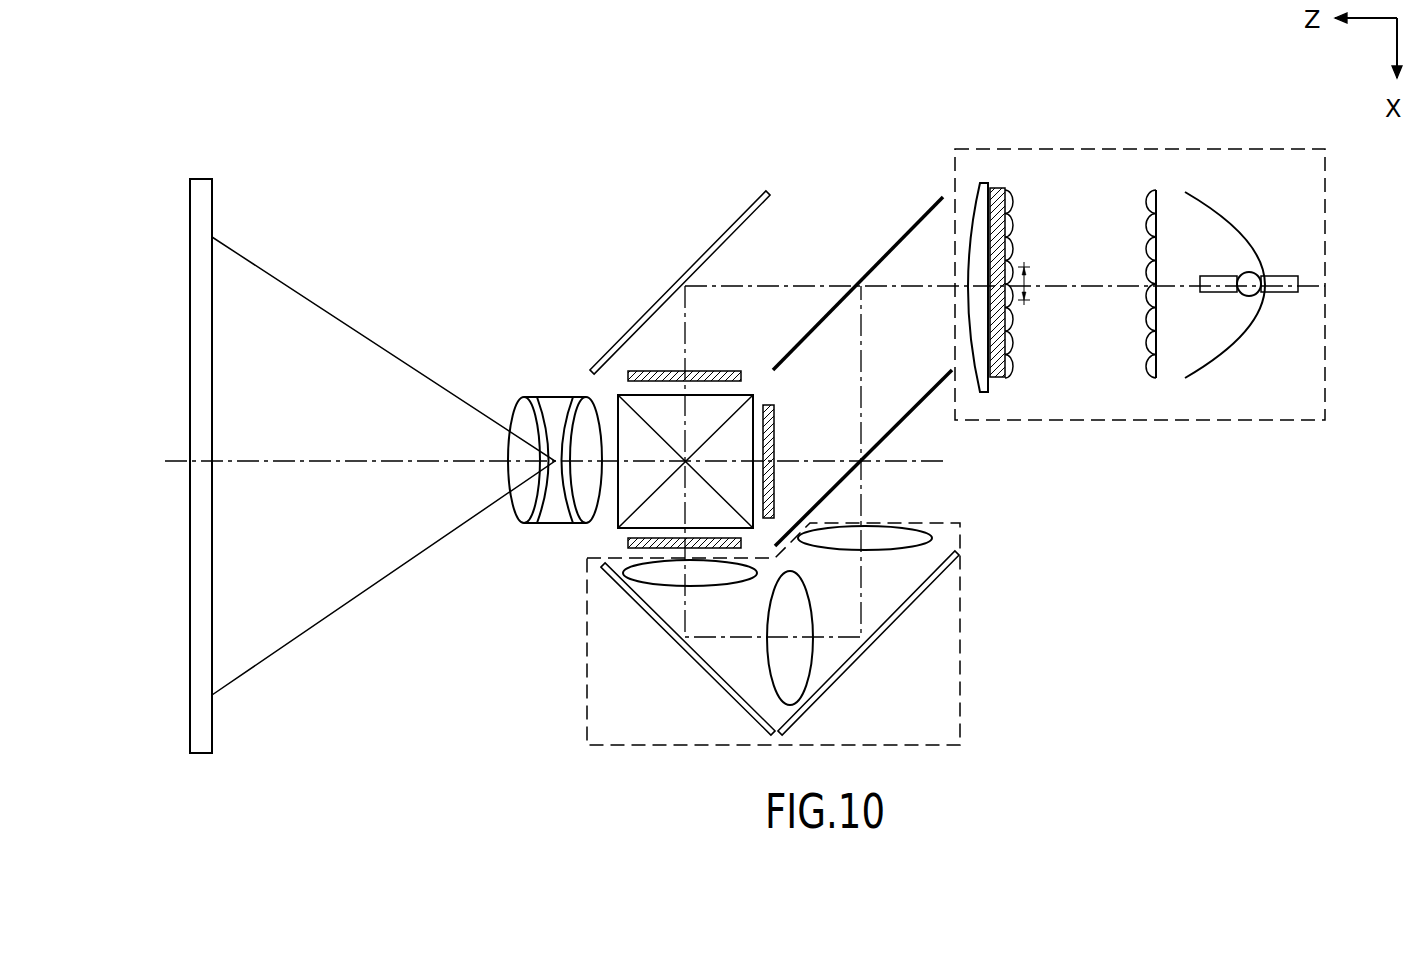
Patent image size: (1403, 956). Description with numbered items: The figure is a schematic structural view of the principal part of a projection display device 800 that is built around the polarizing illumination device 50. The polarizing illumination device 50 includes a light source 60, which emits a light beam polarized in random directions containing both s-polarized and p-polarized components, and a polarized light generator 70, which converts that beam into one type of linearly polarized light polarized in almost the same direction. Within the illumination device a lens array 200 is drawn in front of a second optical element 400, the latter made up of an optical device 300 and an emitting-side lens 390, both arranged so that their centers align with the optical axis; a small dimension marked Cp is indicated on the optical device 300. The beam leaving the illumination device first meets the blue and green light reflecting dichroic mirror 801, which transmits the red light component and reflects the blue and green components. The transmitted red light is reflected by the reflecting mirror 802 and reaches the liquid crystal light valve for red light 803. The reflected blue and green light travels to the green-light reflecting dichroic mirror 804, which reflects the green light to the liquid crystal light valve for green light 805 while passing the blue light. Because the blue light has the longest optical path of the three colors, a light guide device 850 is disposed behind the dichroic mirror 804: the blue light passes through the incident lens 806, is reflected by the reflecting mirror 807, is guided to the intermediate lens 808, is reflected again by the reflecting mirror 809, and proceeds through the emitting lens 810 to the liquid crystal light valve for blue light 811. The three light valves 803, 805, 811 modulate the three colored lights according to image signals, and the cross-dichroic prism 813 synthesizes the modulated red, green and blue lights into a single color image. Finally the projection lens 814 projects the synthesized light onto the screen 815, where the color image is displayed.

The projection display device 800 is at (745, 414).
The blue and green light reflecting dichroic mirror 801 is at (897, 240).
The reflecting mirror 802 is at (680, 270).
The liquid crystal light valve for red light 803 is at (663, 371).
The green-light reflecting dichroic mirror 804 is at (925, 397).
The liquid crystal light valve for green light 805 is at (763, 405).
The incident lens 806 is at (892, 537).
The reflecting mirror 807 is at (937, 588).
The intermediate lens 808 is at (802, 655).
The reflecting mirror 809 is at (715, 672).
The emitting lens 810 is at (657, 575).
The liquid crystal light valve for blue light 811 is at (628, 545).
The cross-dichroic prism 813 is at (612, 531).
The projection lens 814 is at (598, 375).
The screen 815 is at (212, 664).
The light guide device 850 is at (960, 680).
The polarizing illumination device 50 is at (1120, 420).
The light source 60 is at (1285, 168).
The polarized light generator 70 is at (1162, 168).
The first lens array 200 is at (1156, 378).
The optical device 300 is at (1025, 323).
The emitting-side lens 390 is at (985, 392).
The second optical element 400 is at (1008, 369).
The pitch of lens array Cp is at (1027, 289).